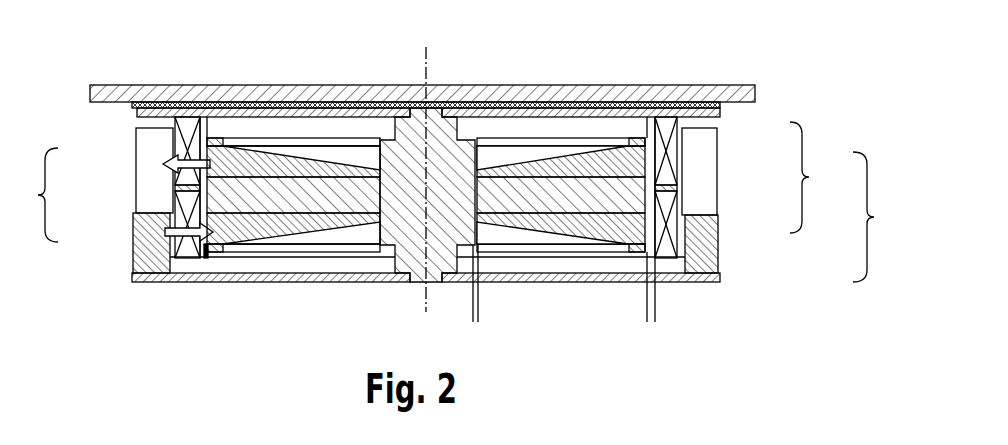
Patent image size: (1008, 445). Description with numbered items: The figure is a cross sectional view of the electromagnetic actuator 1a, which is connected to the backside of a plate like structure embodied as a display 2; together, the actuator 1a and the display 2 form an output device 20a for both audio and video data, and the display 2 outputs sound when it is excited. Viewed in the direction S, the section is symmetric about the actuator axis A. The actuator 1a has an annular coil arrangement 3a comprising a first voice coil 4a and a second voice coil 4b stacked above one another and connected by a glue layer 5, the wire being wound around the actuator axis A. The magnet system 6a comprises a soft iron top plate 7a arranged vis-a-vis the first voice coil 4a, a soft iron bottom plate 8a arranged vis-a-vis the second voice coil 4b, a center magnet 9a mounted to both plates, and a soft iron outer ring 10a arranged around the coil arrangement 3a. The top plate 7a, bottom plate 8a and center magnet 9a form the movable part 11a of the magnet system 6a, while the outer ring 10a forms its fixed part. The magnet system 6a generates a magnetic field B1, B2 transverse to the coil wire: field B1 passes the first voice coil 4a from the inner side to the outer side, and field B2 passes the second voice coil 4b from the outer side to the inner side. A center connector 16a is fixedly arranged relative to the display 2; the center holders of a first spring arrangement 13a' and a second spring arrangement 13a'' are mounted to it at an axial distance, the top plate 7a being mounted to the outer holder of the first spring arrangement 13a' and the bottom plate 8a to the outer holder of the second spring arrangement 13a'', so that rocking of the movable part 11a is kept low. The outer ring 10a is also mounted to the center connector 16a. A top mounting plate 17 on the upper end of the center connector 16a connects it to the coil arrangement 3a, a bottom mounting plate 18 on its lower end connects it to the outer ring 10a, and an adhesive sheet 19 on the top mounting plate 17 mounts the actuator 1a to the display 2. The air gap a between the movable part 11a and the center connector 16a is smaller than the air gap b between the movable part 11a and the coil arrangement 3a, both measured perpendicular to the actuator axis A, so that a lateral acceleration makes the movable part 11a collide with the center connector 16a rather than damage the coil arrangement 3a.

The electromagnetic actuator 1a is at (710, 303).
The display 2 is at (188, 90).
The annular coil arrangement 3a is at (32, 195).
The first voice coil 4a is at (182, 143).
The second voice coil 4b is at (180, 238).
The glue layer 5 is at (180, 187).
The magnet system 6a is at (881, 217).
The top plate 7a is at (633, 157).
The bottom plate 8a is at (628, 238).
The center magnet 9a is at (635, 197).
The outer ring 10a is at (710, 255).
The movable part of the magnet system 11a is at (822, 177).
The first spring arrangement 13a' is at (435, 92).
The second spring arrangement 13a'' is at (426, 285).
The center connector 16a is at (447, 125).
The top mounting plate 17 is at (137, 113).
The bottom mounting plate 18 is at (147, 278).
The adhesive sheet 19 is at (148, 100).
The output device 20a is at (728, 48).
The actuator axis A is at (411, 175).
The direction of view S is at (362, 83).
The magnetic field B1 is at (200, 160).
The magnetic field B2 is at (199, 232).
The air gap a is at (438, 317).
The air gap b is at (688, 317).